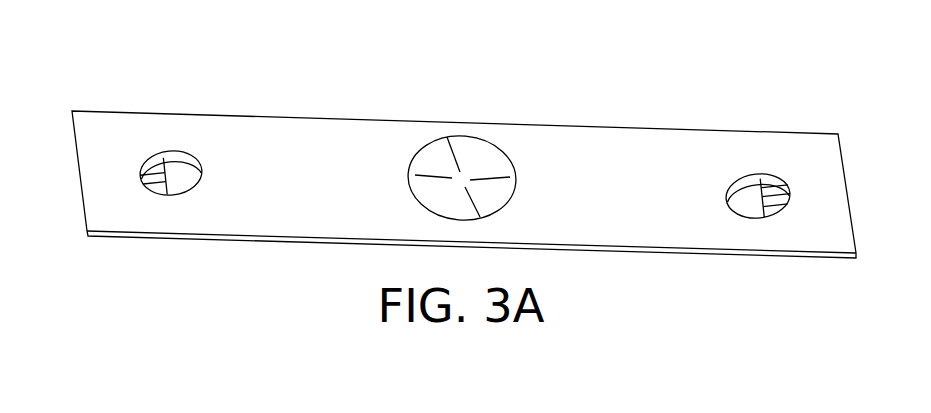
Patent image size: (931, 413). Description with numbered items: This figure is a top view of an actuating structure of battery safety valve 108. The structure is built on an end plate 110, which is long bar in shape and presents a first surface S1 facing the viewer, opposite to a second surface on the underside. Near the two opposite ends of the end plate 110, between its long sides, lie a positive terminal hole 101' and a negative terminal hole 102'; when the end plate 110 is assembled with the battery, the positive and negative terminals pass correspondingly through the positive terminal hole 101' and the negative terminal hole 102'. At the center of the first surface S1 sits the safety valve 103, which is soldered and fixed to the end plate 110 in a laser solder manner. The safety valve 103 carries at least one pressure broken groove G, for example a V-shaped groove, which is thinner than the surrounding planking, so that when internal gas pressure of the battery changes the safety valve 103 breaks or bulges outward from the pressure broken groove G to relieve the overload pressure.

The actuating structure of battery safety valve 108 is at (71, 53).
The end plate 110 is at (597, 142).
The first surface S1 is at (104, 173).
The positive terminal hole 101' is at (176, 214).
The negative terminal hole 102' is at (758, 236).
The safety valve 103 is at (463, 172).
The pressure broken groove G is at (435, 177).